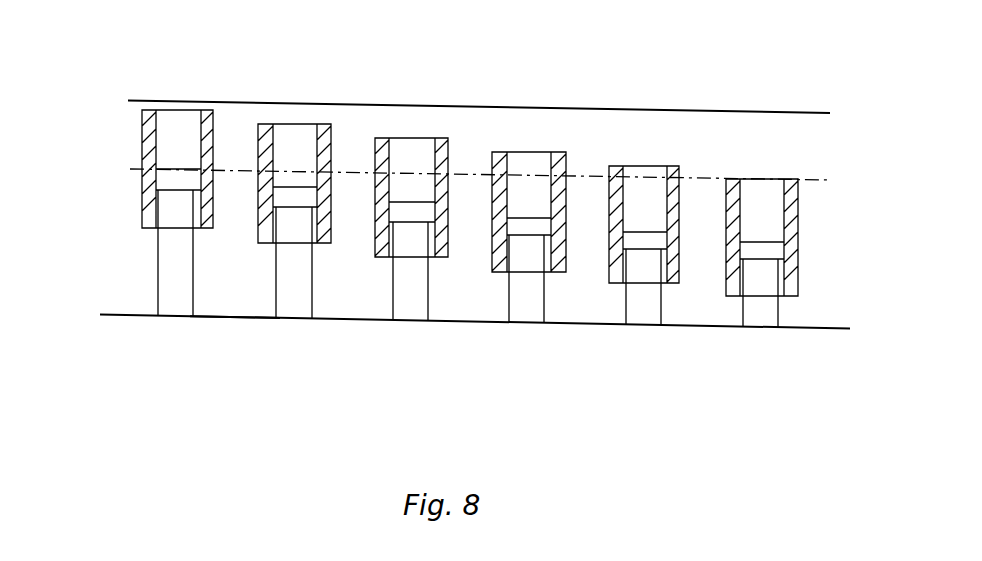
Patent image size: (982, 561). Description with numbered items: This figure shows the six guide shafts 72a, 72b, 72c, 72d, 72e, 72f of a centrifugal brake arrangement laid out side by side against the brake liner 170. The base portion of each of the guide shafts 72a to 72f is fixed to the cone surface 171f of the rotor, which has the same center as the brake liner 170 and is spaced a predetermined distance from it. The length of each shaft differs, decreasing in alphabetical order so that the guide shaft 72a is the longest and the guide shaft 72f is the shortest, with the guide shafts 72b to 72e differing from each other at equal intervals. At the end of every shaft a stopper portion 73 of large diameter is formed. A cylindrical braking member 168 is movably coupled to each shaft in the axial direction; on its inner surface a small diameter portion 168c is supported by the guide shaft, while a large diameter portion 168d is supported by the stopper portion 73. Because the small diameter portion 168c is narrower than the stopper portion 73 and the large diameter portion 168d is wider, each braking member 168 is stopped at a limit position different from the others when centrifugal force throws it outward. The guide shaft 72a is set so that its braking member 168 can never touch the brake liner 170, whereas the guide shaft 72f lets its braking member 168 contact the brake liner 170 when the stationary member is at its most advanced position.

The guide shaft 72a is at (173, 293).
The guide shaft 72b is at (295, 295).
The guide shaft 72c is at (412, 302).
The guide shaft 72d is at (528, 307).
The guide shaft 72e is at (643, 310).
The guide shaft 72f is at (758, 310).
The stopper portion 73 is at (173, 178).
The braking member 168 is at (150, 137).
The small diameter portion 168c is at (158, 215).
The large diameter portion 168d is at (157, 155).
The brake liner 170 is at (700, 180).
The cone surface 171f is at (232, 327).